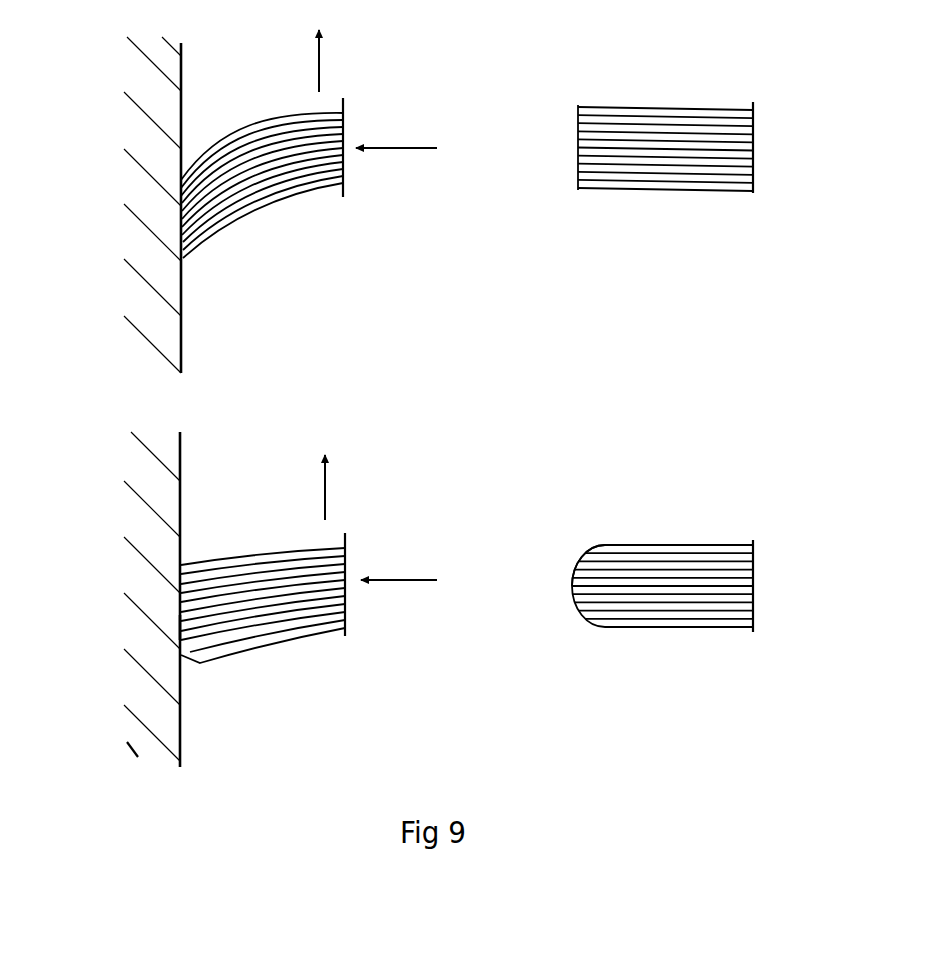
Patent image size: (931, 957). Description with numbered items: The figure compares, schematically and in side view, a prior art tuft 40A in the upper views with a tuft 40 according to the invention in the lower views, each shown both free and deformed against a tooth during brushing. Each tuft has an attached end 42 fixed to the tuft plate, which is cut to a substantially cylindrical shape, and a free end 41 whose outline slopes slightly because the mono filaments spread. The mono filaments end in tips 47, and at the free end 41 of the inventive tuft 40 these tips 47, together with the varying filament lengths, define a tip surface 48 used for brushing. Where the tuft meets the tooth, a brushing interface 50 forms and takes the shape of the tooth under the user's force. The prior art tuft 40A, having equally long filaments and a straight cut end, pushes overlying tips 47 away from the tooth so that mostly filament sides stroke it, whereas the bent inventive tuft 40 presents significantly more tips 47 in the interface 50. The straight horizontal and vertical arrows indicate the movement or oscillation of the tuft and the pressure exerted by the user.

The tuft 40 is at (291, 600).
The prior art tuft 40A is at (278, 168).
The free end 41 is at (586, 532).
The attached end 42 is at (739, 526).
The tip 47 is at (189, 264).
The tip surface 48 is at (176, 628).
The brushing interface 50 is at (176, 213).